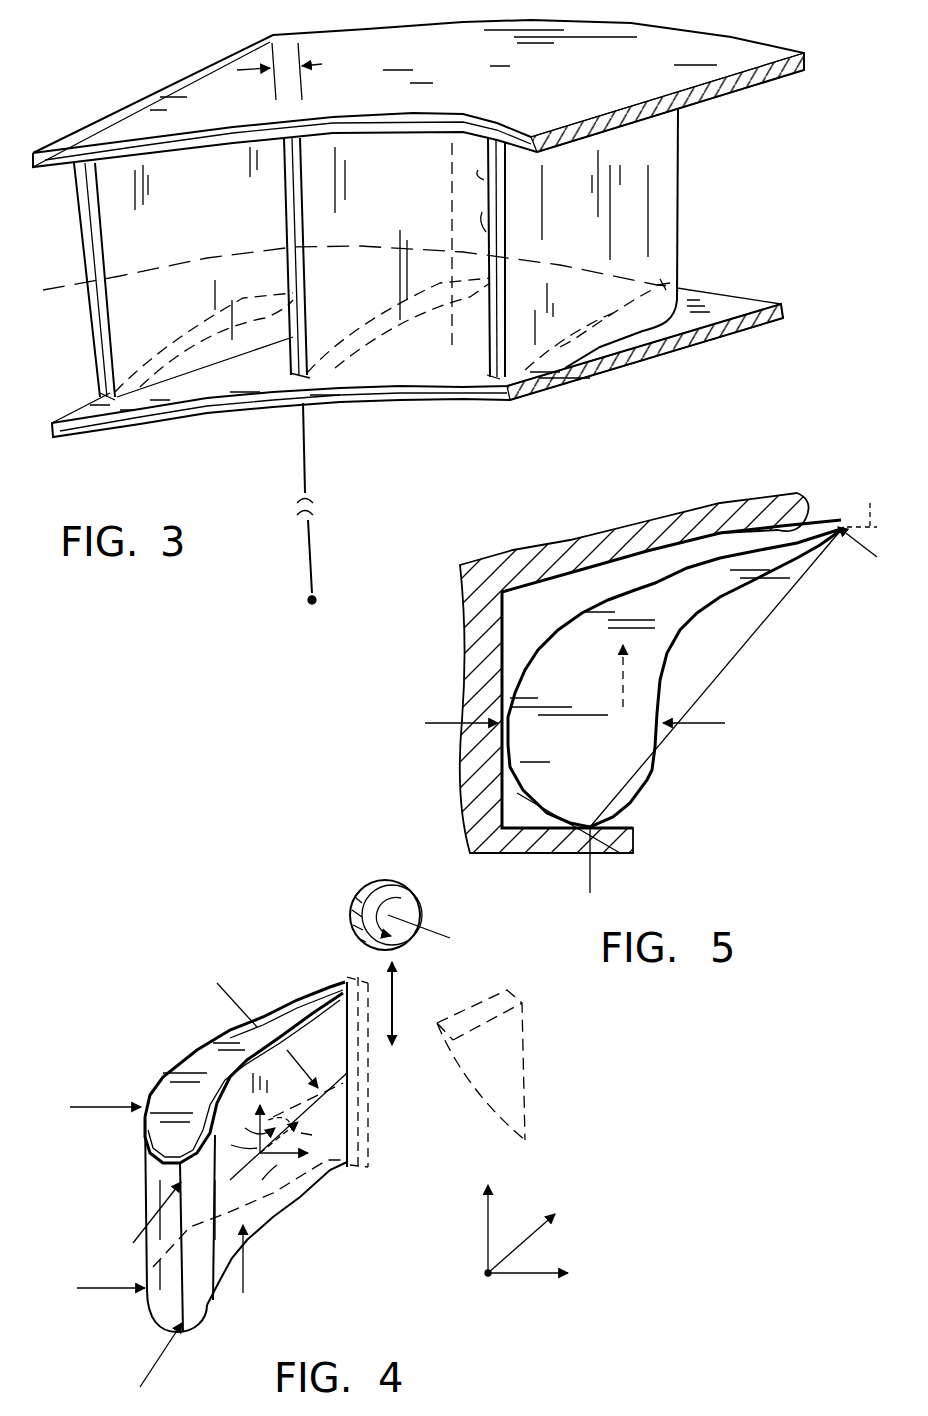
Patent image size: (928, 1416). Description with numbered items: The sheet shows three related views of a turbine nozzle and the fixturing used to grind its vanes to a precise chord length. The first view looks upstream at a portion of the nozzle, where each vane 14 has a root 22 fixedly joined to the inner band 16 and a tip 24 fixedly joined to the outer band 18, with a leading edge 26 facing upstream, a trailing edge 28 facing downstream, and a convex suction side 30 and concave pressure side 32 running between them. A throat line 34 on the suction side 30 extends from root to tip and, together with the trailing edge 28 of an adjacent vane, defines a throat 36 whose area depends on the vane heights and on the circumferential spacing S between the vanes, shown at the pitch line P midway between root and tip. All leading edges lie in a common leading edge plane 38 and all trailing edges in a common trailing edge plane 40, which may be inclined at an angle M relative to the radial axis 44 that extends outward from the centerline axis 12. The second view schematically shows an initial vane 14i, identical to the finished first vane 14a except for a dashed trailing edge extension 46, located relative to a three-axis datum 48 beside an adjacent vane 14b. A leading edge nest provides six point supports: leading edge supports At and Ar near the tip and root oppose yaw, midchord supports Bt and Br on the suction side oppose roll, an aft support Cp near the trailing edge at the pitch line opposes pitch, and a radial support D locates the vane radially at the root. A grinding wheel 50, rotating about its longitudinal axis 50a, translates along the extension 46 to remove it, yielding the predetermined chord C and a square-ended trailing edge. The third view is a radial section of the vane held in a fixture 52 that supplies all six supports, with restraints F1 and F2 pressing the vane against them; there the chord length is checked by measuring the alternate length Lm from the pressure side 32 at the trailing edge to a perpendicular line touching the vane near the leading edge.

In FIG. 3, the centerline axis 12 is at (308, 600).
In FIG. 3, the vane 14 is at (684, 205).
In FIG. 4, the first vane 14a is at (296, 995).
In FIG. 5, the first vane 14a is at (606, 593).
In FIG. 4, the adjacent vane 14b is at (505, 1074).
In FIG. 4, the initial vane 14i is at (375, 1152).
In FIG. 5, the initial vane 14i is at (853, 502).
In FIG. 3, the inner band 16 is at (737, 290).
In FIG. 3, the outer band 18 is at (777, 42).
In FIG. 3, the root 22 is at (641, 338).
In FIG. 4, the root 22 is at (257, 1235).
In FIG. 3, the tip 24 is at (524, 148).
In FIG. 4, the tip 24 is at (163, 1077).
In FIG. 4, the leading edge 26 is at (187, 1297).
In FIG. 5, the leading edge 26 is at (590, 822).
In FIG. 3, the trailing edge 28 is at (287, 202).
In FIG. 4, the trailing edge 28 is at (347, 1070).
In FIG. 5, the trailing edge 28 is at (831, 533).
In FIG. 3, the suction side 30 is at (617, 150).
In FIG. 4, the suction side 30 is at (147, 1163).
In FIG. 3, the pressure side 32 is at (486, 232).
In FIG. 5, the pressure side 32 is at (724, 600).
In FIG. 3, the throat line 34 is at (452, 190).
In FIG. 3, the throat 36 is at (484, 180).
In FIG. 3, the leading edge plane 38 is at (679, 272).
In FIG. 3, the trailing edge plane 40 is at (467, 132).
In FIG. 3, the radial axis 44 is at (305, 447).
In FIG. 4, the trailing edge extension 46 is at (357, 977).
In FIG. 5, the trailing edge extension 46 is at (866, 512).
In FIG. 4, the datum 48 is at (488, 1276).
In FIG. 4, the grinding wheel 50 is at (351, 895).
In FIG. 4, the longitudinal axis 50a is at (433, 933).
In FIG. 5, the fixture 52 is at (698, 502).
In FIG. 3, the angle M is at (322, 64).
In FIG. 3, the pitch line P is at (217, 260).
In FIG. 4, the pitch line P is at (322, 1088).
In FIG. 3, the circumferential spacing S is at (482, 257).
In FIG. 4, the chord C is at (347, 1117).
In FIG. 5, the chord C is at (713, 680).
In FIG. 4, the aft support Cp is at (217, 987).
In FIG. 5, the aft support Cp is at (784, 527).
In FIG. 5, the alternate chord length Lm is at (747, 660).
In FIG. 5, the restraint F1 is at (855, 570).
In FIG. 5, the restraint F2 is at (715, 723).
In FIG. 4, the radial support D is at (245, 1275).
In FIG. 5, the radial support D is at (621, 676).
In FIG. 4, the midchord support Br is at (98, 1289).
In FIG. 5, the midchord support Br is at (445, 723).
In FIG. 4, the midchord support Bt is at (98, 1107).
In FIG. 4, the leading edge support Ar is at (140, 1387).
In FIG. 5, the leading edge support Ar is at (592, 883).
In FIG. 4, the leading edge support At is at (133, 1243).